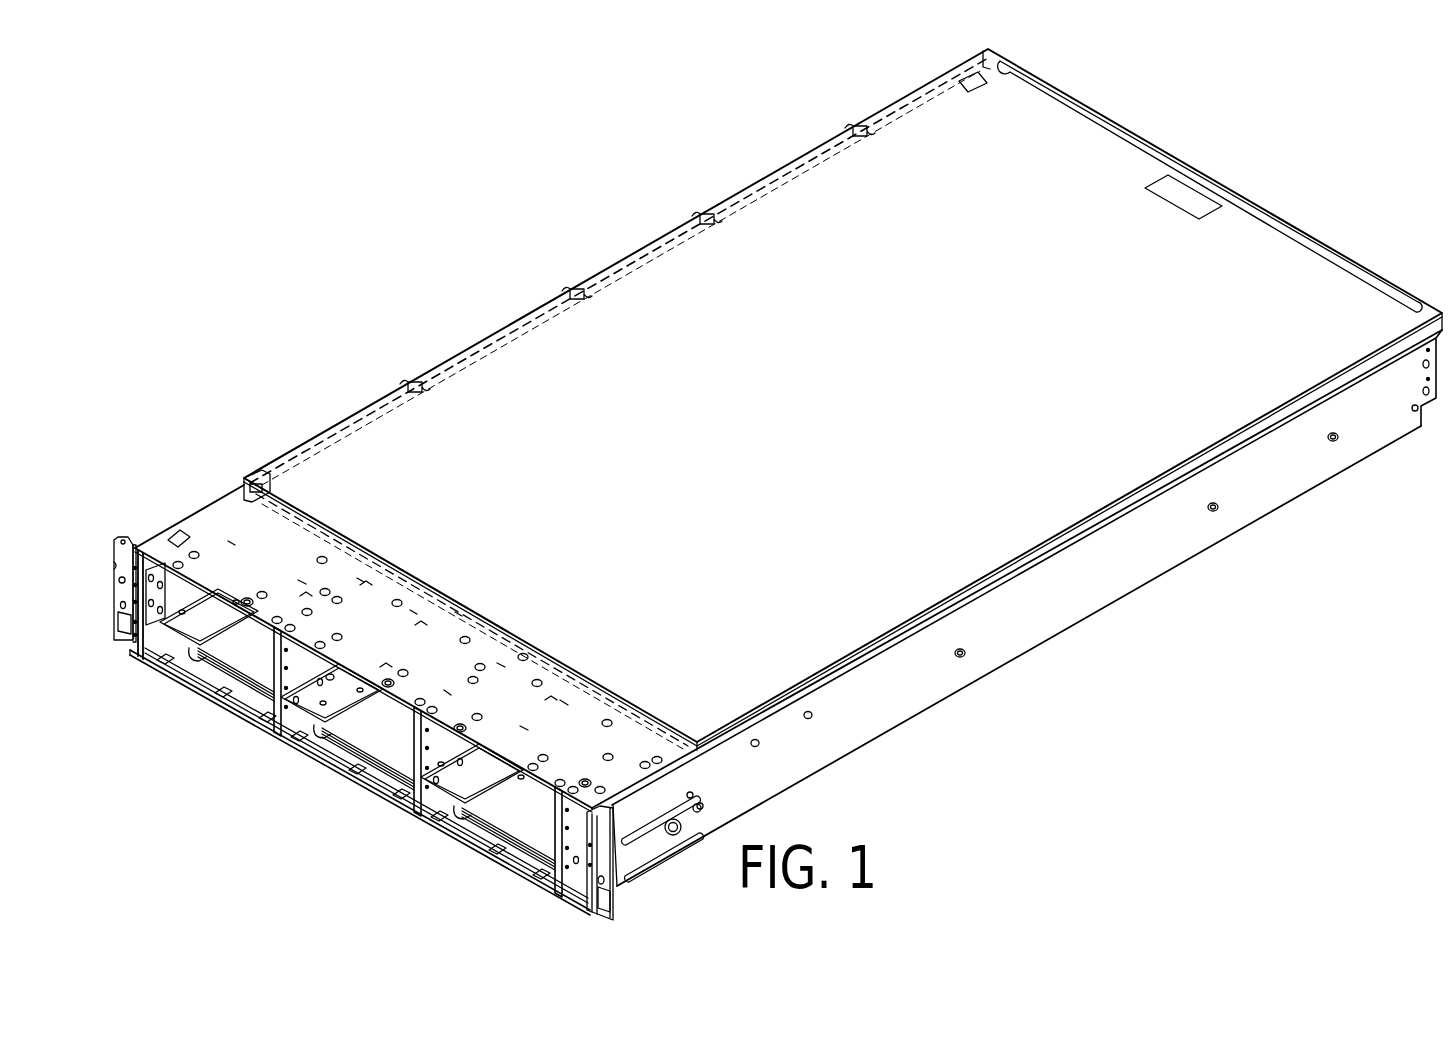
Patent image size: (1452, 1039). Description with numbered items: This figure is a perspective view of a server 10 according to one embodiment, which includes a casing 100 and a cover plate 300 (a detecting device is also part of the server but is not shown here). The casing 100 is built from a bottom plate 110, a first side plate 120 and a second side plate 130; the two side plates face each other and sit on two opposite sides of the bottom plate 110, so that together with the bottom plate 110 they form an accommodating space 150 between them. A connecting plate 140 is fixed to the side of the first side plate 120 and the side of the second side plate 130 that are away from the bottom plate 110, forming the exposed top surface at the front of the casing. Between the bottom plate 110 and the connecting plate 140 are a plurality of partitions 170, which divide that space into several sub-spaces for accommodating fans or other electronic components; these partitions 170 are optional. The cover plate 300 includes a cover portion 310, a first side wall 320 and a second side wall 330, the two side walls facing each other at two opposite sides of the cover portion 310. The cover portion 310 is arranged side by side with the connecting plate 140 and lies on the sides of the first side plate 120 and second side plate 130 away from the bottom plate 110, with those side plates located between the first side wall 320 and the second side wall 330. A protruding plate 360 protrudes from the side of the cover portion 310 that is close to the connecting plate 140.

The server 10 is at (181, 186).
The casing 100 is at (900, 726).
The bottom plate 110 is at (333, 748).
The first side plate 120 is at (131, 652).
The second side plate 130 is at (780, 765).
The connecting plate 140 is at (196, 531).
The accommodating space 150 is at (236, 644).
The partitions 170 is at (298, 680).
The cover plate 300 is at (492, 323).
The cover portion 310 is at (1075, 180).
The first side wall 320 is at (378, 432).
The second side wall 330 is at (987, 585).
The protruding plate 360 is at (247, 508).